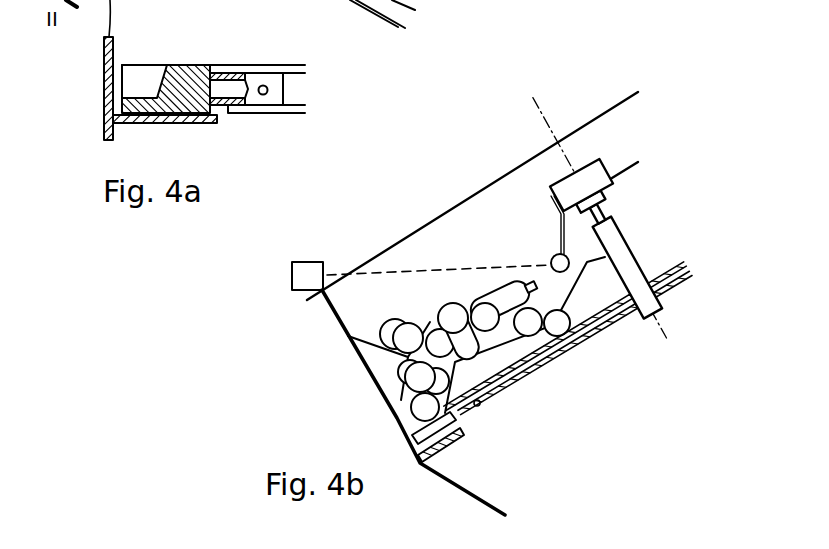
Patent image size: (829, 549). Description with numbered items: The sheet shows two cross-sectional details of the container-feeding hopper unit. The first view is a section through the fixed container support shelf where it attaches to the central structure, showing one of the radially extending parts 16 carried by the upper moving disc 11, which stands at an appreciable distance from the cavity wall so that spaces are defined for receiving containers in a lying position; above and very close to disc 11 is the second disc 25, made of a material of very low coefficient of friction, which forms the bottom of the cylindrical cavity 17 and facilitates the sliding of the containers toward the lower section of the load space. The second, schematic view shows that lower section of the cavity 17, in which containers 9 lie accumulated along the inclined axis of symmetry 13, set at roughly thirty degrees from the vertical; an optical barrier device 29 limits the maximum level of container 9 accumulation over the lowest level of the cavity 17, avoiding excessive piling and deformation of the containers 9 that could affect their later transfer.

In FIG. 4A, the parts 16 is at (151, 75).
In FIG. 4A, the second disc 25 is at (238, 68).
In FIG. 4A, the upper moving disc 11 is at (237, 110).
In FIG. 4B, the optical barrier device 29 is at (308, 262).
In FIG. 4B, the containers 9 is at (457, 315).
In FIG. 4B, the cylindrical cavity 17 is at (514, 213).
In FIG. 4B, the axis of symmetry 13 is at (623, 243).